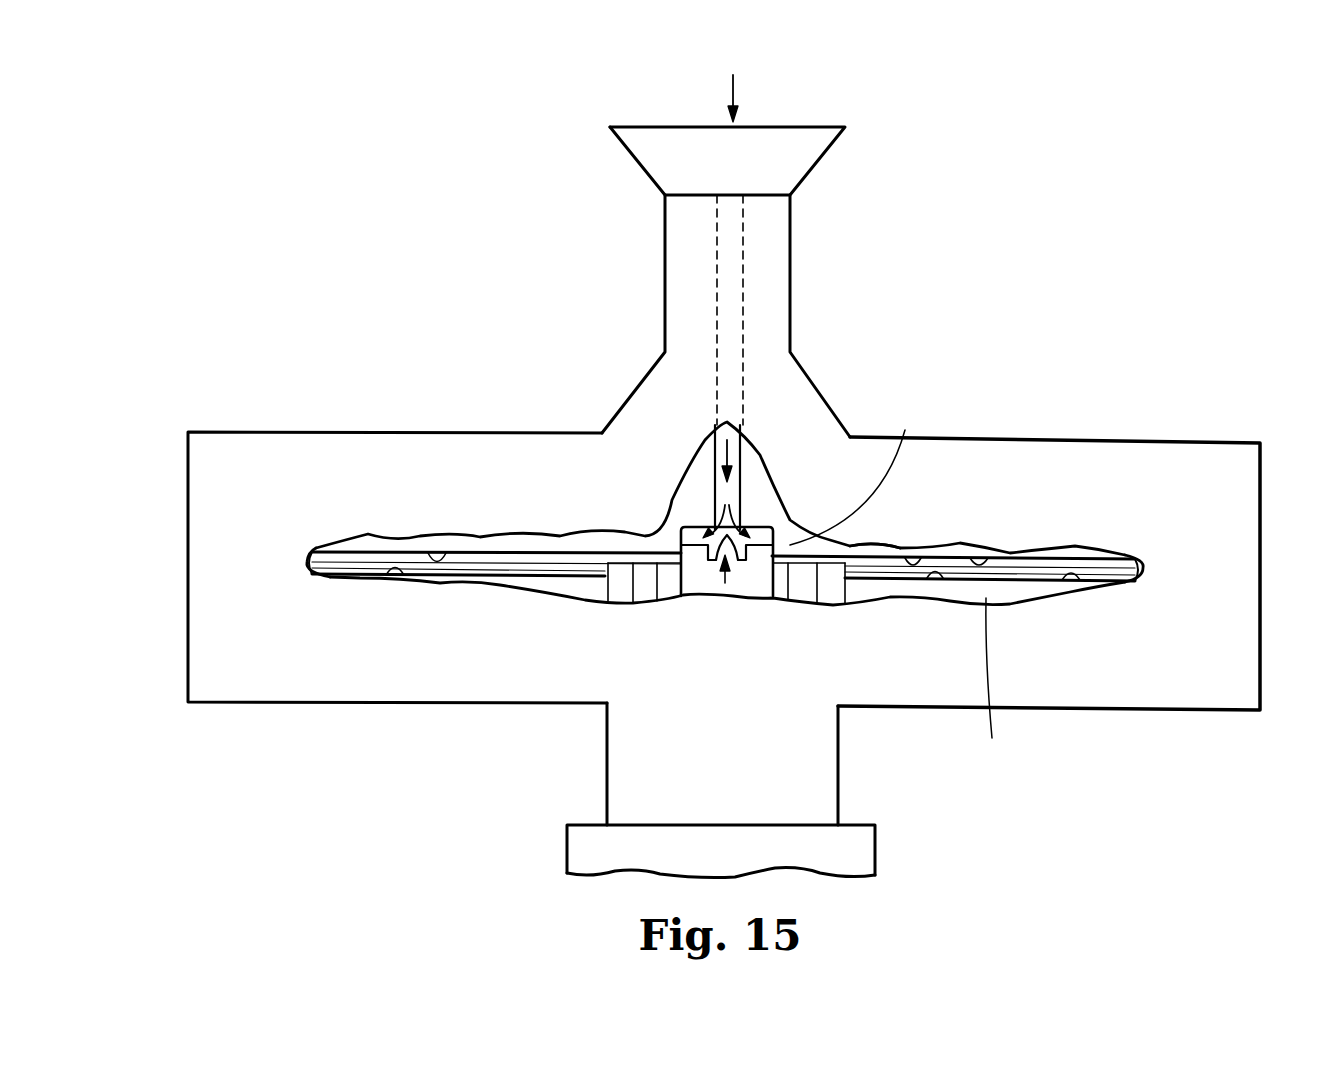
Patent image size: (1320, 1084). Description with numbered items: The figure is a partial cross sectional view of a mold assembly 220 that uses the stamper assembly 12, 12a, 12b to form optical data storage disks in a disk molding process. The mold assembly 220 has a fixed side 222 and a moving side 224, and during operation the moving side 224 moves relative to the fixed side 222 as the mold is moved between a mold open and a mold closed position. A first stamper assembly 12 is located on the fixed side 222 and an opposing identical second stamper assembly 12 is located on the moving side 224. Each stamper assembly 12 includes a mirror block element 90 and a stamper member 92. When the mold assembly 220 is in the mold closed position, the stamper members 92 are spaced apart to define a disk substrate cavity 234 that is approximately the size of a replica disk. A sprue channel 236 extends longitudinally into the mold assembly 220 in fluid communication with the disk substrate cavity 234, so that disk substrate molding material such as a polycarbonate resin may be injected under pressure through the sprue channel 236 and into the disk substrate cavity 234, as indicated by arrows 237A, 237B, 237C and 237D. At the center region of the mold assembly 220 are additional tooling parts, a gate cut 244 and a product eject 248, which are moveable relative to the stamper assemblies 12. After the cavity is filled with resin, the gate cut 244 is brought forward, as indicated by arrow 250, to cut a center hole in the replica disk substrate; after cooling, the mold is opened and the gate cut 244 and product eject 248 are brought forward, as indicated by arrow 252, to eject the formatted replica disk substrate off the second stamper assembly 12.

The stamper assembly 12 is at (790, 545).
The stamper assembly 12a is at (847, 487).
The stamper assembly 12b is at (989, 668).
The mirror block element 90 is at (537, 553).
The stamper member 92 is at (440, 553).
The mold assembly 220 is at (498, 220).
The fixed side 222 is at (426, 392).
The moving side 224 is at (470, 796).
The disk substrate cavity 234 is at (496, 548).
The sprue channel 236 is at (745, 468).
The arrow 237A is at (737, 85).
The arrow 237B is at (722, 445).
The arrow 237C is at (716, 522).
The arrow 237D is at (747, 520).
The gate cut 244 is at (708, 584).
The product eject 248 is at (671, 586).
The arrow 250 is at (722, 578).
The arrow 252 is at (802, 582).